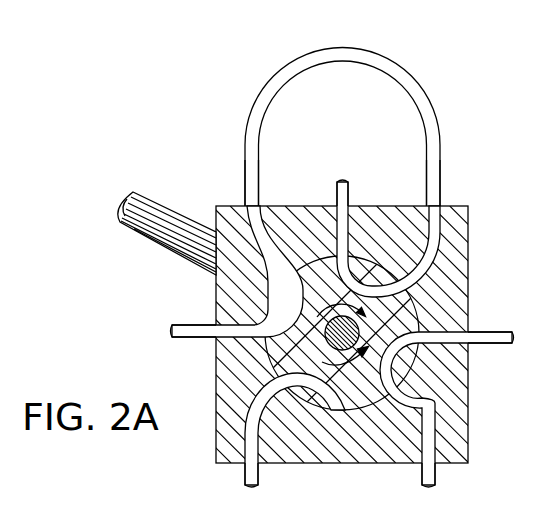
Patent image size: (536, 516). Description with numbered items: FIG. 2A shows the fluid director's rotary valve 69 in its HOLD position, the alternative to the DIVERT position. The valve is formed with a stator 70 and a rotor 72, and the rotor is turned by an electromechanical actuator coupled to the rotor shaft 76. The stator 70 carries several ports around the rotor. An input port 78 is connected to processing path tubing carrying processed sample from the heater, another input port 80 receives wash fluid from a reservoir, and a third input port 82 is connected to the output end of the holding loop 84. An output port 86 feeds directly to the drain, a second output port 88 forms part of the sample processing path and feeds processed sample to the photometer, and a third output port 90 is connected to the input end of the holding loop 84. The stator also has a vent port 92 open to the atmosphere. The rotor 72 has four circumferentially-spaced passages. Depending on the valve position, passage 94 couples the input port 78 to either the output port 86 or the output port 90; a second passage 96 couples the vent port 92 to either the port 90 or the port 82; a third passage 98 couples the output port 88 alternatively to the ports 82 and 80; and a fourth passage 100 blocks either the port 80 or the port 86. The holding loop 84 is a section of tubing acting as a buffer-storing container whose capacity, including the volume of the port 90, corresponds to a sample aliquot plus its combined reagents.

The rotary valve 69 is at (229, 168).
The stator 70 is at (468, 270).
The rotor 72 is at (392, 305).
The rotor shaft 76 is at (158, 202).
The input port 78 is at (228, 342).
The input port 80 is at (467, 442).
The input port 82 is at (435, 223).
The holding loop 84 is at (410, 72).
The output port 86 is at (243, 447).
The output port 88 is at (462, 345).
The output port 90 is at (255, 217).
The vent port 92 is at (343, 220).
The passage 94 is at (290, 322).
The second passage 96 is at (365, 285).
The third passage 98 is at (397, 354).
The fourth passage 100 is at (318, 388).